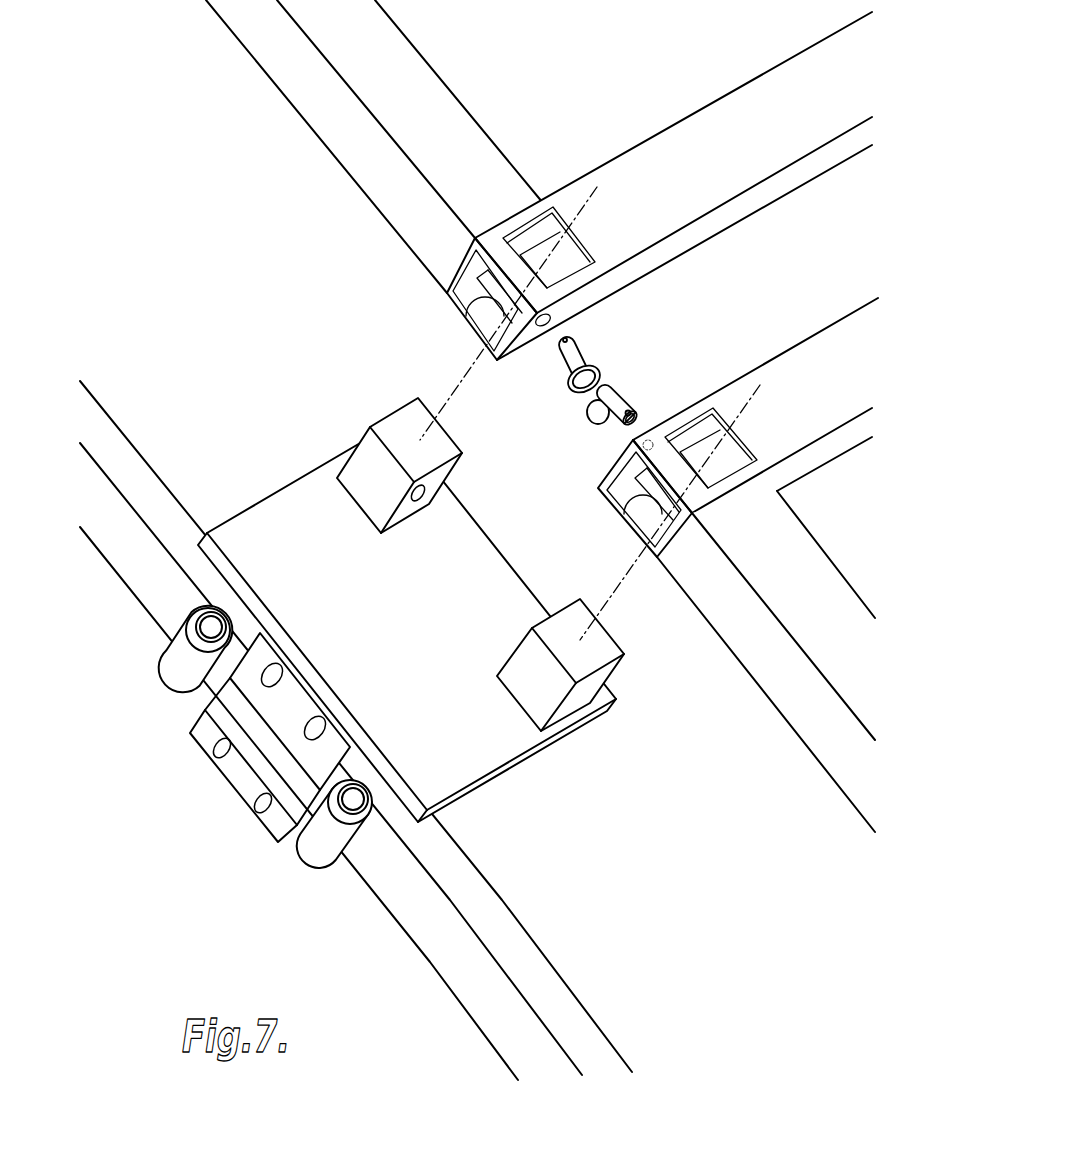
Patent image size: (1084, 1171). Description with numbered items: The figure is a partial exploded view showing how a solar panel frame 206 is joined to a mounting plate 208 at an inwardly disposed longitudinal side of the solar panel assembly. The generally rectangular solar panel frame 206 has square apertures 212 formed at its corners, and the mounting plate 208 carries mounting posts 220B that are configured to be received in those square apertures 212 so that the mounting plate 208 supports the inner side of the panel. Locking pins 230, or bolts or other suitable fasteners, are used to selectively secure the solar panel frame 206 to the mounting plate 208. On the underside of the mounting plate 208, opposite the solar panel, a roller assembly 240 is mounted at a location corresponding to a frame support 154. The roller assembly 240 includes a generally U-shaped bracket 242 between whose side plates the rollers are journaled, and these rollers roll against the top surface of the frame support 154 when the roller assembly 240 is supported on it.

The frame support 154 is at (472, 998).
The solar panel frame 206 is at (314, 122).
The square aperture 212 is at (466, 311).
The mounting plate 208 is at (468, 522).
The mounting post 220B is at (389, 418).
The locking pin 230 is at (560, 352).
The roller assembly 240 is at (259, 737).
The U-shaped bracket 242 is at (302, 700).